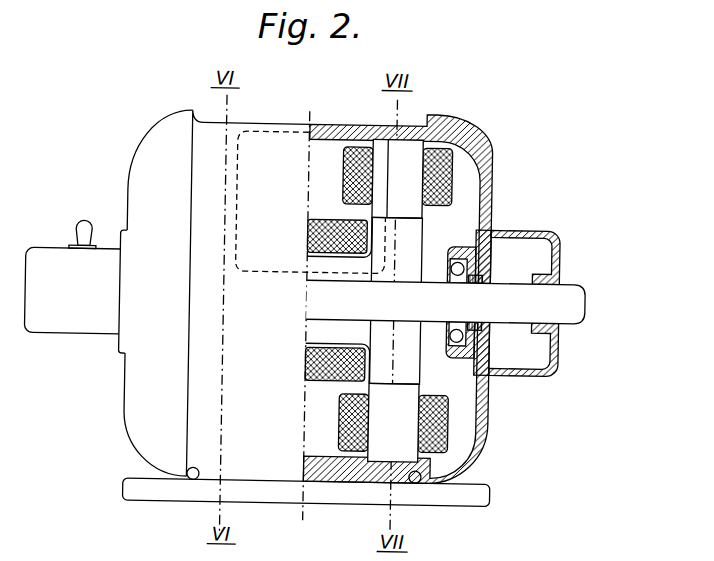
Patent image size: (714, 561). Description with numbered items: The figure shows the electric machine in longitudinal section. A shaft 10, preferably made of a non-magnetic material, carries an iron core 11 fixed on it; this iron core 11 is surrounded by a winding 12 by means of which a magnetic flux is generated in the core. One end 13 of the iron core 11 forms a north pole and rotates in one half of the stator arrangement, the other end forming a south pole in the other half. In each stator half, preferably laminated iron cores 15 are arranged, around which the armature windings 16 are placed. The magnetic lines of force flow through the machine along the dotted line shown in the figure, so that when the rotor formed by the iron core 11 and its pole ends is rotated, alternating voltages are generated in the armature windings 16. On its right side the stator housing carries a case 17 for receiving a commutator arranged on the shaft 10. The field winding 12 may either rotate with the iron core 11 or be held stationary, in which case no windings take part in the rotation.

The shaft 10 is at (563, 286).
The iron core 11 is at (309, 268).
The winding 12 is at (306, 226).
The end of the iron core 13 is at (412, 227).
The iron cores 15 is at (379, 146).
The armature windings 16 is at (349, 148).
The case 17 is at (552, 228).